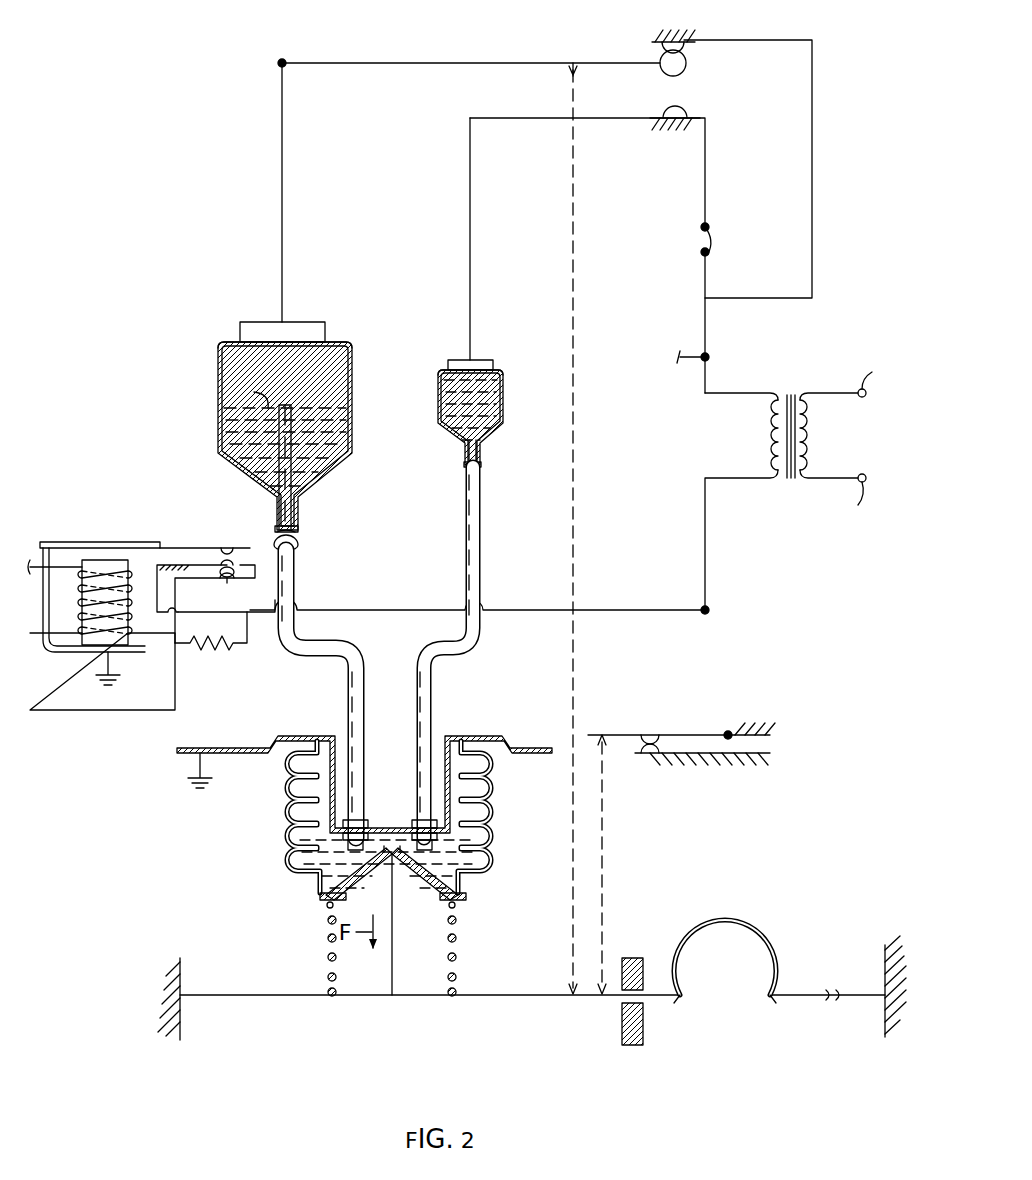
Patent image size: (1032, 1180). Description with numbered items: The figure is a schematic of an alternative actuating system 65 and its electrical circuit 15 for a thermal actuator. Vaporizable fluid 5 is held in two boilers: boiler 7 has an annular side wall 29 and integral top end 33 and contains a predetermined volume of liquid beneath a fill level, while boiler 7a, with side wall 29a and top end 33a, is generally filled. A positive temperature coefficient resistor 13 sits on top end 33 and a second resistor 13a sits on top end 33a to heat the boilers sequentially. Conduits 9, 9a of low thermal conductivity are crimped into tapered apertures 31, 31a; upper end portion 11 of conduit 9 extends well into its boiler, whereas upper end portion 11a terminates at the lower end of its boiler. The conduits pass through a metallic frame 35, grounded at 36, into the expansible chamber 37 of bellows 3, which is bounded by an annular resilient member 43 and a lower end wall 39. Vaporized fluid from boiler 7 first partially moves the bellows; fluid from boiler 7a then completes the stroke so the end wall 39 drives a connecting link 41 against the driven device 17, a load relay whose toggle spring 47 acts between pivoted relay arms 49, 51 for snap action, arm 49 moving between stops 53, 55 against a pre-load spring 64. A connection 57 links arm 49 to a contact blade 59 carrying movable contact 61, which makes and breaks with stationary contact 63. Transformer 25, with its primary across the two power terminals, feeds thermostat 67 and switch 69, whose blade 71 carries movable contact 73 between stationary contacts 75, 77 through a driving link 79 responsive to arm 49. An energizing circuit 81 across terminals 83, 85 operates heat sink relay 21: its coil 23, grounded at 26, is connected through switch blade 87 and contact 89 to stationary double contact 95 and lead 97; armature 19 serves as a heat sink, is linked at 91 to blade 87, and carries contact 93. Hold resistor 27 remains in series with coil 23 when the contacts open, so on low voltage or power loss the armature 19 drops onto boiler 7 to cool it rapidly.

The bellows 3 is at (375, 907).
The vaporizable fluid 5 is at (235, 436).
The boiler 7 is at (257, 418).
The boiler 7a is at (484, 294).
The conduit 9 is at (348, 698).
The conduit 9a is at (432, 695).
The upper end portion 11 is at (288, 405).
The upper end portion 11a is at (480, 450).
The positive temperature coefficient resistor 13 is at (305, 322).
The positive temperature coefficient resistor 13a is at (480, 360).
The electrical circuit 15 is at (818, 32).
The driven device 17 is at (380, 1006).
The heat sink 19 is at (160, 542).
The heat sink relay 21 is at (82, 538).
The coil 23 is at (132, 650).
The transformer 25 is at (792, 482).
The ground 26 is at (94, 682).
The hold resistor 27 is at (212, 650).
The annular side wall 29 is at (218, 395).
The annular side wall 29a is at (503, 388).
The aperture 31 is at (298, 516).
The aperture 31a is at (464, 460).
The top end 33 is at (230, 342).
The top end 33a is at (445, 368).
The frame 35 is at (228, 748).
The ground 36 is at (195, 786).
The expansible chamber 37 is at (460, 882).
The lower end wall 39 is at (462, 902).
The connecting link 41 is at (394, 942).
The expansible resilient member 43 is at (292, 814).
The toggle spring 47 is at (726, 920).
The relay arm 49 is at (486, 995).
The relay arm 51 is at (800, 995).
The stop 53 is at (642, 958).
The stop 55 is at (642, 1018).
The connecting means 57 is at (604, 888).
The contact blade 59 is at (620, 735).
The movable contact 61 is at (650, 735).
The stationary contact 63 is at (652, 755).
The pre-load spring 64 is at (458, 957).
The actuating system 65 is at (100, 483).
The thermostat 67 is at (716, 236).
The electrical switch 69 is at (622, 55).
The switch arm 71 is at (415, 63).
The movable contact 73 is at (684, 63).
The stationary contact 75 is at (680, 118).
The stationary contact 77 is at (675, 40).
The driving link 79 is at (578, 570).
The energizing circuit 81 is at (151, 624).
The circuit terminal 83 is at (714, 358).
The circuit terminal 85 is at (712, 612).
The switch blade 87 is at (216, 604).
The movable contact 89 is at (228, 580).
The mechanical link 91 is at (250, 576).
The movable contact 93 is at (224, 548).
The stationary double contact 95 is at (228, 560).
The lead 97 is at (402, 610).